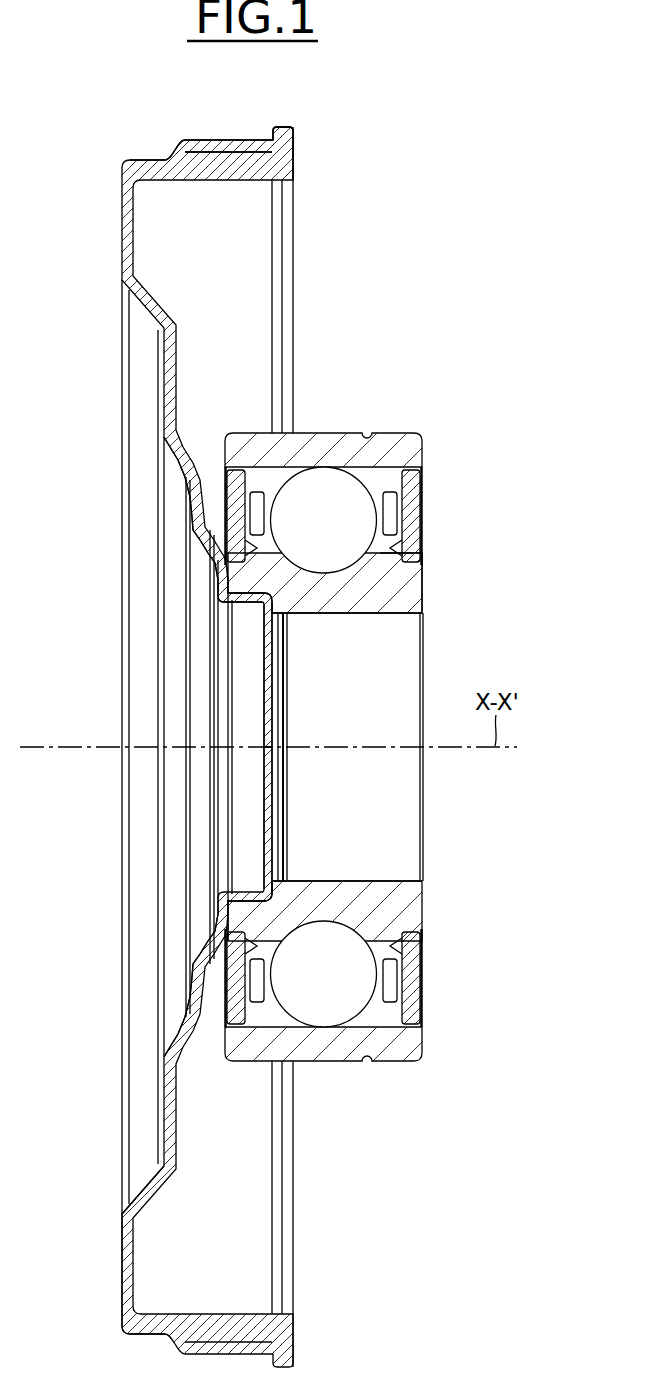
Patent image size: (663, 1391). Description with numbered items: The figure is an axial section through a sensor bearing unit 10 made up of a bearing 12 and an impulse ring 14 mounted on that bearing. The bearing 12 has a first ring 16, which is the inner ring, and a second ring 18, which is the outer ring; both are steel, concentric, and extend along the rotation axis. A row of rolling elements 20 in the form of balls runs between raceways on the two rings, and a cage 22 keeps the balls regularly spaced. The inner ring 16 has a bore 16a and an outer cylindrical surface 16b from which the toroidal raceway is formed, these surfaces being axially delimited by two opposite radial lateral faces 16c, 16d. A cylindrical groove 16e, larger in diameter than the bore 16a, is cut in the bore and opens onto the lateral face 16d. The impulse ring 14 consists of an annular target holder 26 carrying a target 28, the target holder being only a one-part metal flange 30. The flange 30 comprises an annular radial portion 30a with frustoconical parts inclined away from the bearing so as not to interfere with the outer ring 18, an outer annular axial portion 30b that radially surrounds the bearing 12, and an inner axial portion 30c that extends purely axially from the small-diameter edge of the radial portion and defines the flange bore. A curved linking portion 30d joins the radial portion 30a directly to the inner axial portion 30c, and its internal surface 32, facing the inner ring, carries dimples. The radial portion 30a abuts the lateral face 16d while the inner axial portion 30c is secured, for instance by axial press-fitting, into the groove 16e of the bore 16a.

The sensor bearing unit 10 is at (275, 727).
The bearing 12 is at (280, 729).
The impulse ring 14 is at (200, 727).
The first ring 16 is at (276, 733).
The bore 16a is at (355, 614).
The outer cylindrical surface 16b is at (410, 538).
The radial lateral face 16c is at (428, 596).
The radial lateral face 16d is at (230, 898).
The cylindrical groove 16e is at (250, 886).
The second ring 18 is at (424, 1045).
The rolling elements 20 is at (339, 984).
The cage 22 is at (383, 990).
The target holder 26 is at (151, 1137).
The target 28 is at (291, 170).
The flange 30 is at (169, 1023).
The annular radial portion 30a is at (197, 510).
The outer annular axial portion 30b is at (224, 146).
The inner axial portion 30c is at (252, 603).
The curved linking portion 30d is at (232, 602).
The internal surface 32 is at (226, 578).